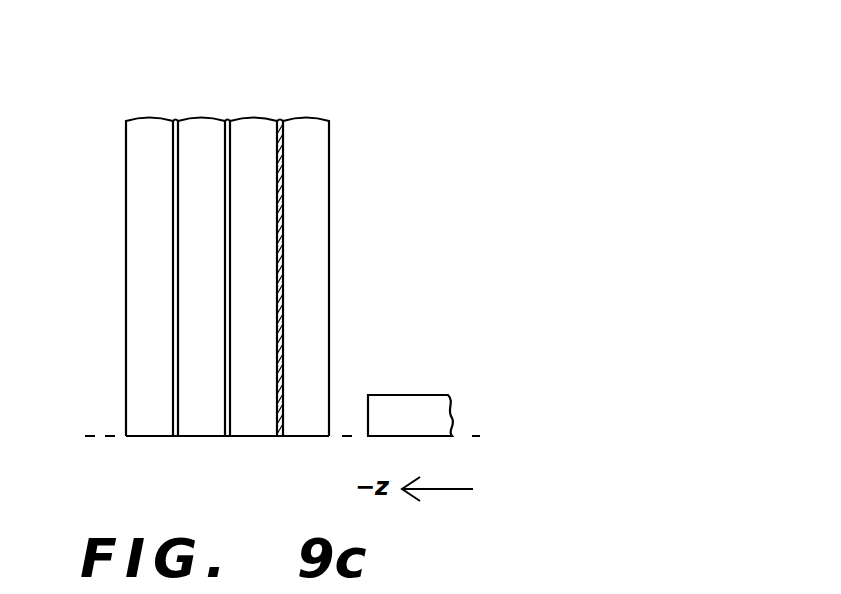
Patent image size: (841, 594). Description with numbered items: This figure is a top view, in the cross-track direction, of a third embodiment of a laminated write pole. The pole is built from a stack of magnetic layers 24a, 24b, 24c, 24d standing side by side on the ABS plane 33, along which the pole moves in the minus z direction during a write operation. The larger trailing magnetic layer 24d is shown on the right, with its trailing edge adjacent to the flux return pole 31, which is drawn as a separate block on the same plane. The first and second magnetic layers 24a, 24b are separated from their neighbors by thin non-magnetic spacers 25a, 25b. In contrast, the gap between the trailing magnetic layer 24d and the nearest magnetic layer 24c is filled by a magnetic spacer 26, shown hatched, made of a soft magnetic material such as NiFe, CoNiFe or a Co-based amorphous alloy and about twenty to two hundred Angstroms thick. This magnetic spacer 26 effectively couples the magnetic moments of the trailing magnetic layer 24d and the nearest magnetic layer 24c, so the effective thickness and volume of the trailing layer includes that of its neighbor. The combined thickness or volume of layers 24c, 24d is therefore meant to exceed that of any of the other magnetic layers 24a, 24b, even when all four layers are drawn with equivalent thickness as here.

The magnetic layer 24a is at (137, 240).
The magnetic layer 24b is at (196, 424).
The nearest magnetic layer 24c is at (262, 424).
The trailing magnetic layer 24d is at (320, 236).
The non-magnetic spacer 25a is at (174, 119).
The non-magnetic spacer 25b is at (228, 119).
The magnetic spacer 26 is at (280, 119).
The flux return pole 31 is at (421, 406).
The ABS plane 33 is at (279, 439).